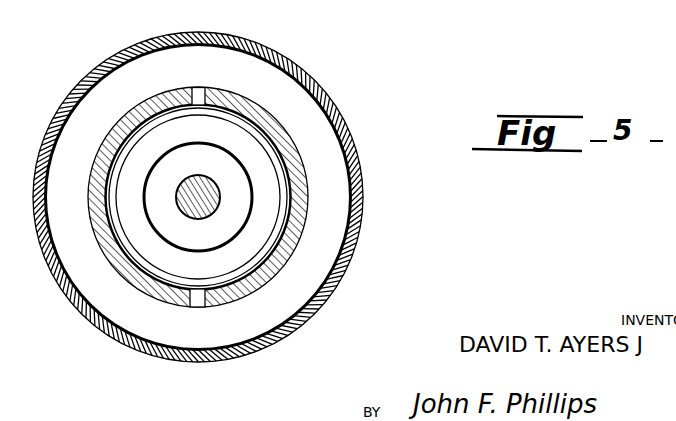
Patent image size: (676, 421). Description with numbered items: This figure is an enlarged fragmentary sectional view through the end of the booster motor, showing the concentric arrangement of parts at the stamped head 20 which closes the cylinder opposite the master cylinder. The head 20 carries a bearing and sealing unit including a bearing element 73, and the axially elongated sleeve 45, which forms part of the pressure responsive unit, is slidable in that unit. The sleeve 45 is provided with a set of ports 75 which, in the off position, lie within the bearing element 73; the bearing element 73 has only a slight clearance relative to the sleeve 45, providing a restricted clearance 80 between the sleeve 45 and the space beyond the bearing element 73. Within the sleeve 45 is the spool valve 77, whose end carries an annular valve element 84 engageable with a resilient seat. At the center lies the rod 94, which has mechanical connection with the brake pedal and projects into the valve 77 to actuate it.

The stamped head 20 is at (295, 64).
The bearing element 73 is at (107, 82).
The ports 75 is at (197, 92).
The restricted clearance 80 is at (271, 119).
The sleeve 45 is at (295, 223).
The annular valve element 84 is at (253, 258).
The spool valve 77 is at (152, 233).
The rod 94 is at (199, 178).